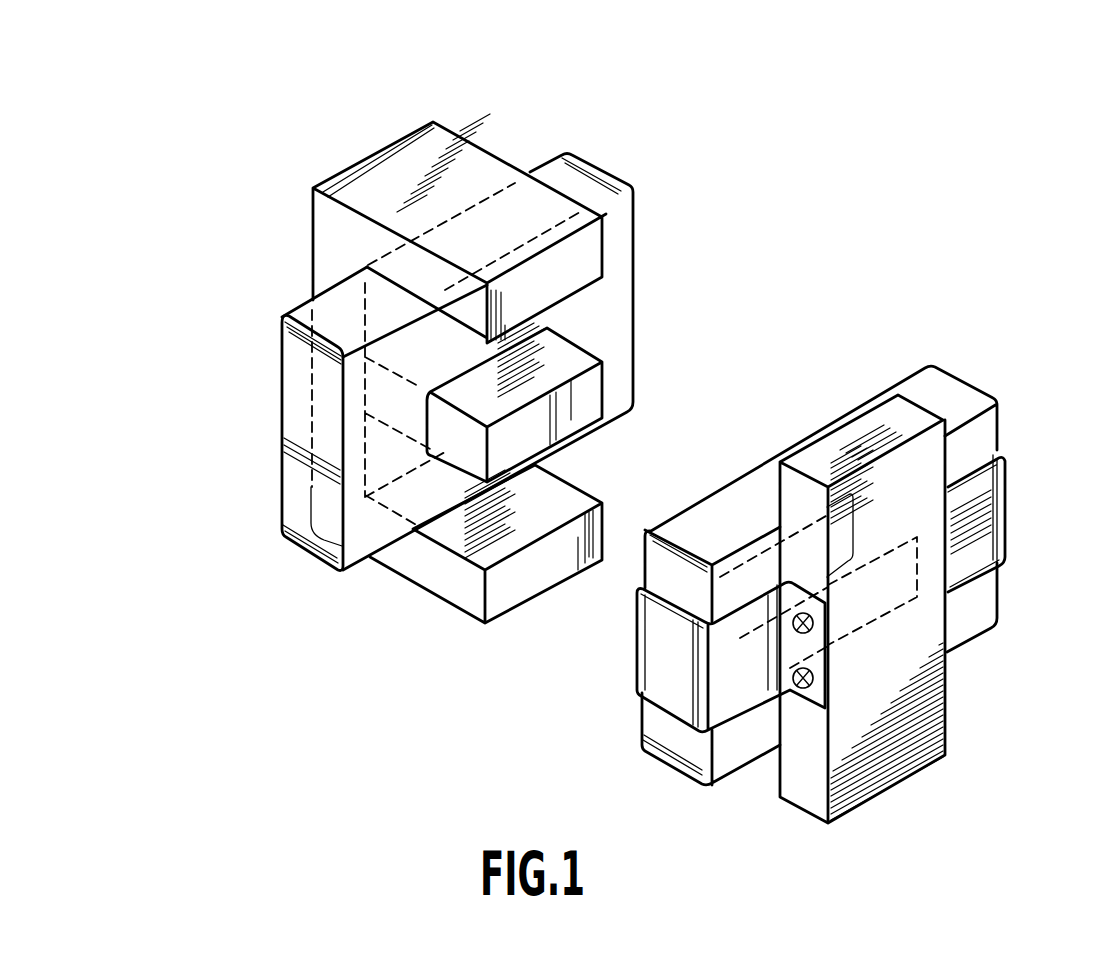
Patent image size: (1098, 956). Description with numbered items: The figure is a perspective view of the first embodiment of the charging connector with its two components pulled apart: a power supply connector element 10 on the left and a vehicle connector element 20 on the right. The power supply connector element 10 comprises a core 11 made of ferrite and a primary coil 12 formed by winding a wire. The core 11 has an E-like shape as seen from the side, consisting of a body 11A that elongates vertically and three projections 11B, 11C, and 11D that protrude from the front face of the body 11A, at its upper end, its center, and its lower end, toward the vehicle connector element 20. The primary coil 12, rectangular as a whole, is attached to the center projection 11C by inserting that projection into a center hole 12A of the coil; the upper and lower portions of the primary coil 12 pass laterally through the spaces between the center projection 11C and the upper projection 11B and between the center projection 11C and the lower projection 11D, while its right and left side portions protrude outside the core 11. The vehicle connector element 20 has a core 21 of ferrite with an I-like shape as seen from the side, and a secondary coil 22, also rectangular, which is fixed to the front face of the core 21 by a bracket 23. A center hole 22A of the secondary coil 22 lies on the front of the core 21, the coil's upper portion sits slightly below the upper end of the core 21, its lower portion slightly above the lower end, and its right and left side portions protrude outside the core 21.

The power supply connector element 10 is at (682, 196).
The core 11 is at (332, 220).
The body 11A is at (307, 486).
The upper projection 11B is at (487, 170).
The center projection 11C is at (567, 363).
The lower projection 11D is at (543, 582).
The primary coil 12 is at (620, 297).
The center hole 12A is at (452, 385).
The vehicle connector element 20 is at (950, 322).
The core 21 is at (908, 414).
The secondary coil 22 is at (738, 497).
The center hole 22A is at (882, 598).
The bracket 23 is at (674, 690).